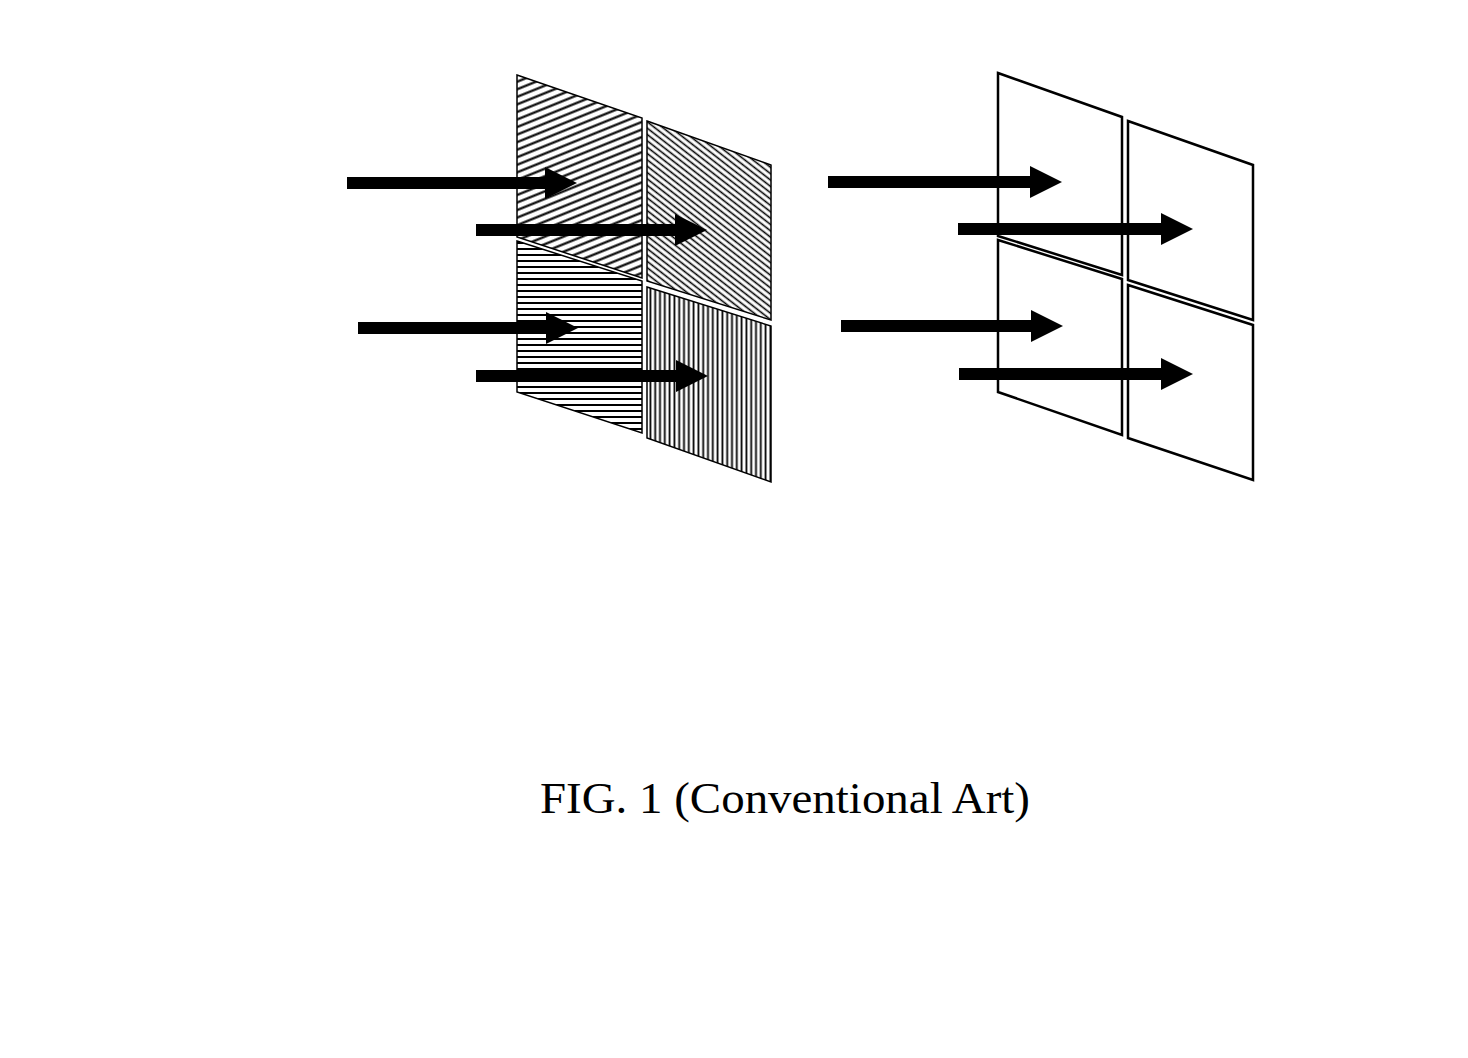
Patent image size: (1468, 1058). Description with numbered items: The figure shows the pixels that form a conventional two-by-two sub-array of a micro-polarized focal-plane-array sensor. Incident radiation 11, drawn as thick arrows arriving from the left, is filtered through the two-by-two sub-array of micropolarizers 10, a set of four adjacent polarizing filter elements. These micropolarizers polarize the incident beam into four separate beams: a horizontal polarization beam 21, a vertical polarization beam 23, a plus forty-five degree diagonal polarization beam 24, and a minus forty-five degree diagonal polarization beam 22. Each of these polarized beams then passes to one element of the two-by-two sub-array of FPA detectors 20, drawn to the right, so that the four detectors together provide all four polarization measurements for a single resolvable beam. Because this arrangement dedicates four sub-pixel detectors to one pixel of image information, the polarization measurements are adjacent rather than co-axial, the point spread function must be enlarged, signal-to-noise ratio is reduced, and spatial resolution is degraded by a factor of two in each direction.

The 2×2 sub-array of micropolarizers 10 is at (663, 460).
The incident radiation 11 is at (357, 170).
The 2×2 sub-array of FPA detectors 20 is at (1220, 482).
The horizontal polarization beam 21 is at (863, 168).
The −45° diagonal polarization beam 22 is at (900, 338).
The vertical polarization beam 23 is at (972, 386).
The +45° diagonal polarization beam 24 is at (945, 230).